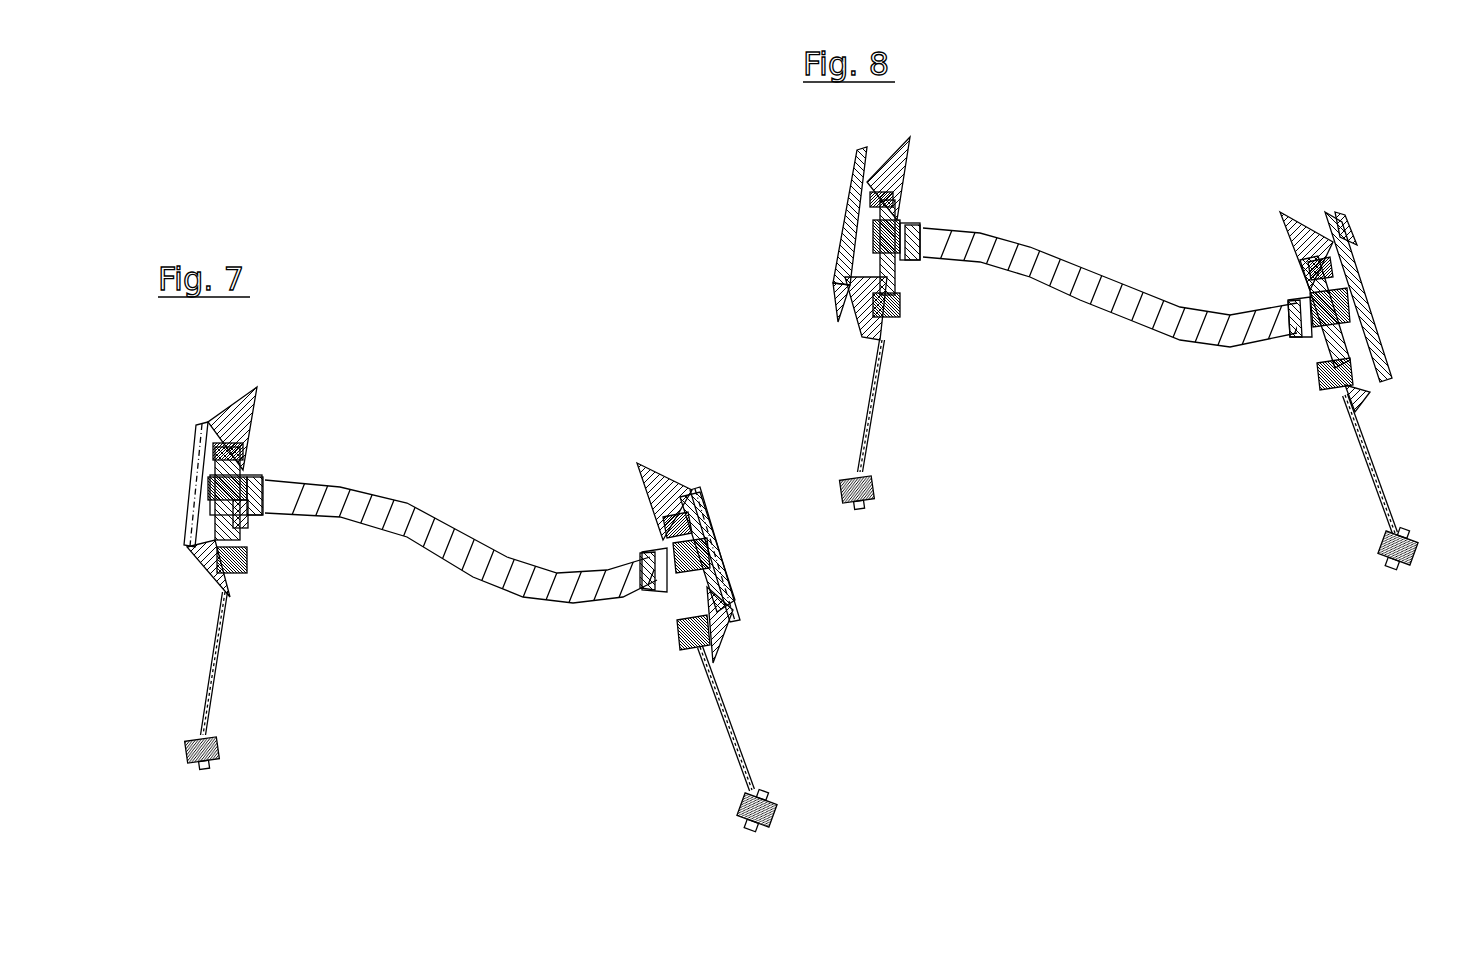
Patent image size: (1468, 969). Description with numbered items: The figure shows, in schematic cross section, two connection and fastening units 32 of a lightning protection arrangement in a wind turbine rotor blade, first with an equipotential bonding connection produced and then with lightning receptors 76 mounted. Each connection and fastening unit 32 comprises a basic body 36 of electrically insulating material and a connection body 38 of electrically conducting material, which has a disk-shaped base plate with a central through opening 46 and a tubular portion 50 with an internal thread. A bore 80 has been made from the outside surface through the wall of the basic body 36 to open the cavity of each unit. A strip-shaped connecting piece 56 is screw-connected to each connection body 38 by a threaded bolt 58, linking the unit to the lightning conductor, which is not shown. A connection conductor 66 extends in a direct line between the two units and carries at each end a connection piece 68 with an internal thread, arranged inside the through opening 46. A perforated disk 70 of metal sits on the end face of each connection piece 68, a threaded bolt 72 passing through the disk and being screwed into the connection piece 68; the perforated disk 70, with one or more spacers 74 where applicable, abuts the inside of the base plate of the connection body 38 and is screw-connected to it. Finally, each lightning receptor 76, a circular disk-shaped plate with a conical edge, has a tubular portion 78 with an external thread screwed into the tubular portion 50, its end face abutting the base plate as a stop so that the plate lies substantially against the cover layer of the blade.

In FIG. 7, the connection and fastening unit 32 is at (178, 472).
In FIG. 7, the basic body 36 is at (213, 415).
In FIG. 7, the connection body 38 is at (250, 432).
In FIG. 8, the connection body 38 is at (905, 178).
In FIG. 7, the through opening 46 is at (240, 520).
In FIG. 8, the tubular portion 50 is at (853, 317).
In FIG. 7, the connecting piece 56 is at (220, 662).
In FIG. 7, the threaded bolt 58 is at (247, 570).
In FIG. 7, the connection conductor 66 is at (462, 540).
In FIG. 8, the connection conductor 66 is at (1115, 298).
In FIG. 7, the connection piece 68 is at (250, 475).
In FIG. 7, the perforated disk 70 is at (210, 507).
In FIG. 7, the threaded bolt 72 is at (208, 490).
In FIG. 7, the spacer 74 is at (213, 537).
In FIG. 8, the lightning receptor 76 is at (845, 237).
In FIG. 8, the tubular portion 78 is at (830, 295).
In FIG. 7, the bore 80 is at (208, 445).